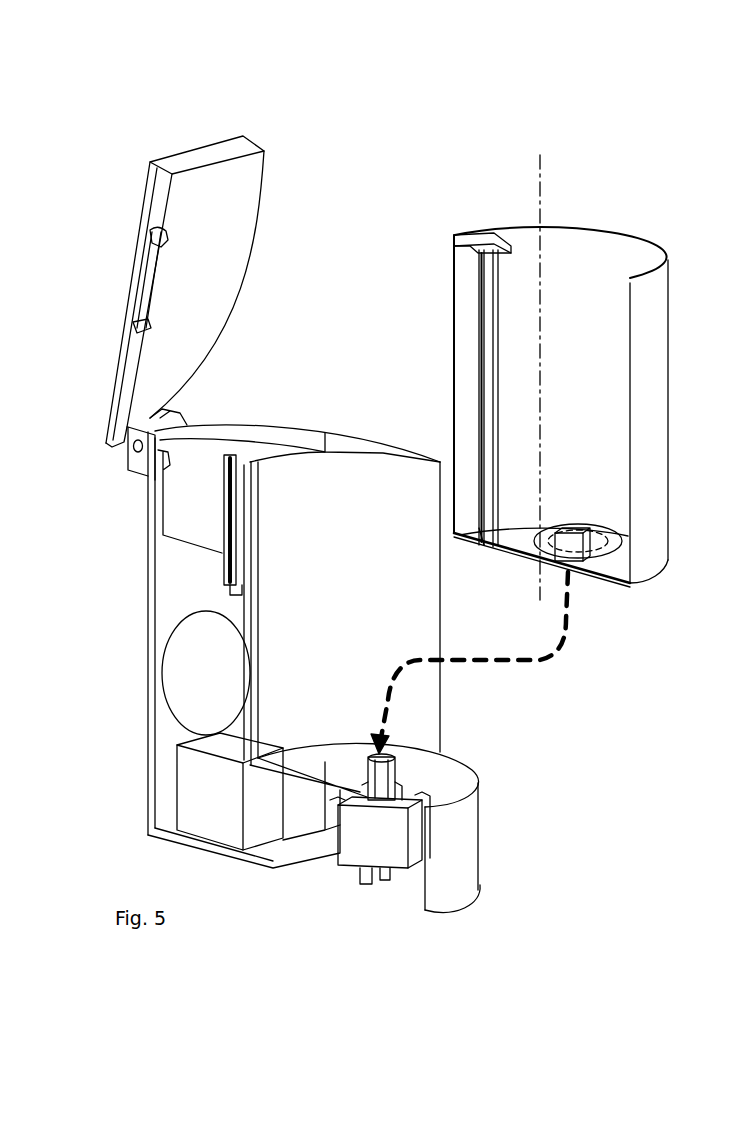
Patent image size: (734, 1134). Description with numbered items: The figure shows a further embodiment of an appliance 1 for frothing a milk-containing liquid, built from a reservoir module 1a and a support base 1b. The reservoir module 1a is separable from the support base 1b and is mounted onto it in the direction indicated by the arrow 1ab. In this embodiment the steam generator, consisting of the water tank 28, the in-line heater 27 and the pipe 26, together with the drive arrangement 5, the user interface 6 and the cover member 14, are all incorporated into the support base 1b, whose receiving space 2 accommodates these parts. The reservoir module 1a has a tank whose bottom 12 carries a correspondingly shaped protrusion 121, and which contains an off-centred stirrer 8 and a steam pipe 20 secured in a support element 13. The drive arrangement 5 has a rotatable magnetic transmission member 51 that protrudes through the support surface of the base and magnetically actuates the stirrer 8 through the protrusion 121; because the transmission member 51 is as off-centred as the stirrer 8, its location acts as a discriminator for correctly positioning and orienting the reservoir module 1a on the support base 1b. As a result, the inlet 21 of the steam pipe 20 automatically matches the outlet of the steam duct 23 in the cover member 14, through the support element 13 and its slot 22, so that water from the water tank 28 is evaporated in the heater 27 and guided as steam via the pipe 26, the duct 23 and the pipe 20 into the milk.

The appliance 1 is at (401, 172).
The reservoir module 1a is at (681, 322).
The support base 1b is at (478, 723).
The arrow 1ab is at (558, 642).
The receiving space / floor 2 is at (303, 848).
The drive arrangement 5 is at (380, 838).
The rotatable magnetic transmission member 51 is at (363, 760).
The user interface 6 is at (190, 803).
The off-centred stirrer 8 is at (596, 535).
The tank bottom 12 is at (513, 538).
The protrusion 121 is at (567, 547).
The support element 13 is at (470, 237).
The cover member 14 is at (246, 188).
The steam pipe 20 is at (485, 412).
The inlet 21 is at (484, 252).
The slot 22 is at (487, 528).
The steam duct 23 is at (140, 289).
The pipe 26 is at (227, 567).
The in-line heater 27 is at (188, 680).
The water tank 28 is at (178, 517).